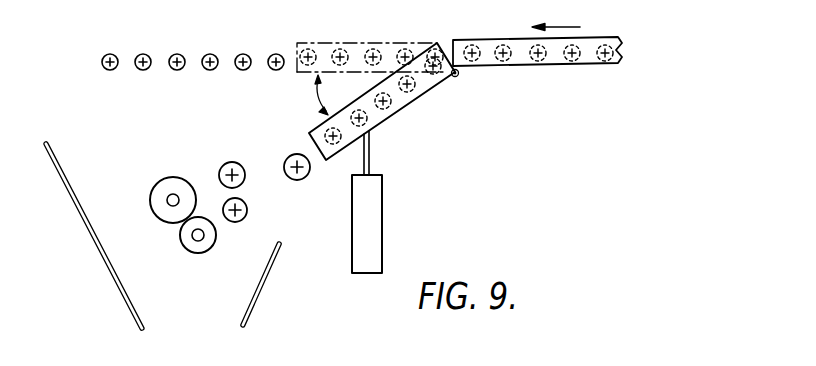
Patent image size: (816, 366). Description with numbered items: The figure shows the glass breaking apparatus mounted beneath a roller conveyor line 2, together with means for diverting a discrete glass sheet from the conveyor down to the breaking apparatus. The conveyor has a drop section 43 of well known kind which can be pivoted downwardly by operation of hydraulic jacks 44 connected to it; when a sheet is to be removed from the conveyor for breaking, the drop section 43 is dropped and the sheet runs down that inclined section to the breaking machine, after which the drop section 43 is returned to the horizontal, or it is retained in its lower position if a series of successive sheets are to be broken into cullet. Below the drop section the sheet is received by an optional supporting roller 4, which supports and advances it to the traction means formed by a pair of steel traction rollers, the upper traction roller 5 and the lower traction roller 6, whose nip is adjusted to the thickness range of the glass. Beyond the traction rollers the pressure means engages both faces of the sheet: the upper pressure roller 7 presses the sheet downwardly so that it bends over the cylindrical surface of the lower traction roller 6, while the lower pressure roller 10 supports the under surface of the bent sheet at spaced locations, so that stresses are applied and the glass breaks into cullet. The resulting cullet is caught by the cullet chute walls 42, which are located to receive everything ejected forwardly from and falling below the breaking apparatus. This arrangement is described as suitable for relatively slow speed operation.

The roller conveyor line 2 is at (179, 58).
The supporting roller 4 is at (303, 175).
The upper traction roller 5 is at (237, 162).
The lower traction roller 6 is at (247, 210).
The upper pressure roller 7 is at (177, 194).
The lower pressure roller 10 is at (200, 241).
The cullet chute walls 42 is at (90, 230).
The drop section 43 is at (425, 93).
The hydraulic jacks 44 is at (380, 225).